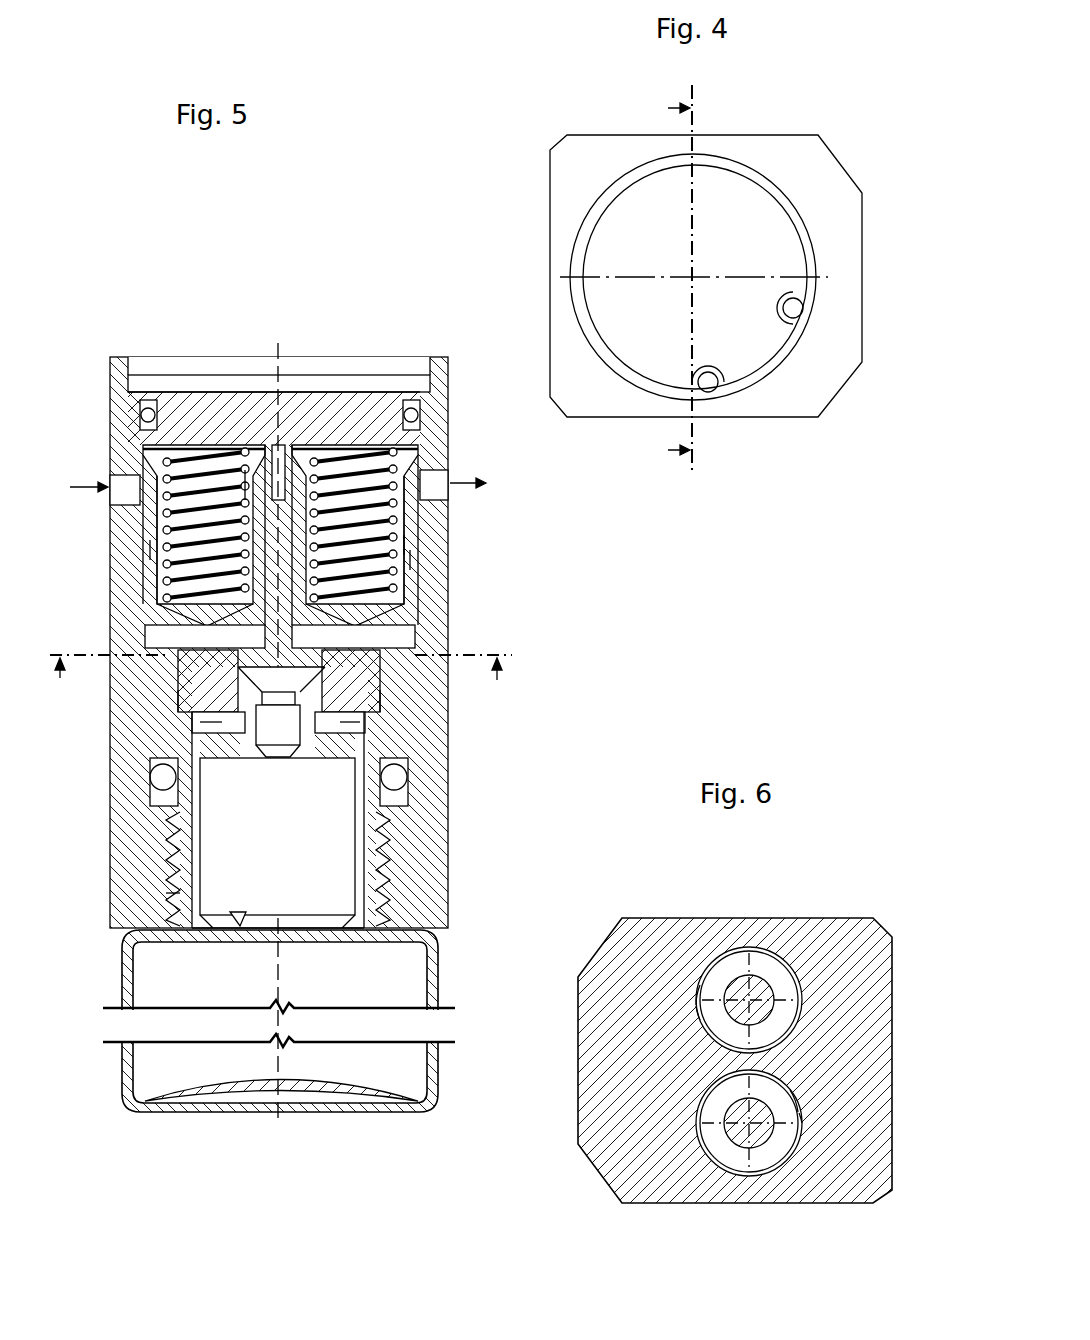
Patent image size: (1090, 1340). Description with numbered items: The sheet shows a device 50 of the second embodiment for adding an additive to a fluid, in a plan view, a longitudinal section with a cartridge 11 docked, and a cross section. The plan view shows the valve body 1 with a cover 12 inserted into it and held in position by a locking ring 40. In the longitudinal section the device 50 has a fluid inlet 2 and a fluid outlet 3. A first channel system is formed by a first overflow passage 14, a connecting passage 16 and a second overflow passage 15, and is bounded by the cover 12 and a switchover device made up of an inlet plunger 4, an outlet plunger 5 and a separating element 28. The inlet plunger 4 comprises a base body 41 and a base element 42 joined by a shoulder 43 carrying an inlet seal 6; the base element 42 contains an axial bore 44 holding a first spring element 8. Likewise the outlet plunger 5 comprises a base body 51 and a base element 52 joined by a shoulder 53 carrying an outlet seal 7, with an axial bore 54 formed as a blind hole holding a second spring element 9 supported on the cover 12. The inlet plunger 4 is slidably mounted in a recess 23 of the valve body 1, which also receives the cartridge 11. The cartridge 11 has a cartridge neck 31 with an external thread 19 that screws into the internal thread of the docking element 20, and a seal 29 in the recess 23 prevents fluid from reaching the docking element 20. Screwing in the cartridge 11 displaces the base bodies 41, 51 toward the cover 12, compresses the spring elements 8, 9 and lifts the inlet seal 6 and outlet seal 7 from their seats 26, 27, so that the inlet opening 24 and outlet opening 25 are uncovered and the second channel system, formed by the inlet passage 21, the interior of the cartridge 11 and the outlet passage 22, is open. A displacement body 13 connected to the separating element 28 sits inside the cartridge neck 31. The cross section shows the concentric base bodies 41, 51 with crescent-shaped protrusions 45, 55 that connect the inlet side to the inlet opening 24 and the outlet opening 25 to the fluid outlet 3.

In FIG. 5, the valve body 1 is at (448, 762).
In FIG. 4, the valve body 1 is at (592, 170).
In FIG. 6, the valve body 1 is at (639, 952).
In FIG. 5, the fluid inlet 2 is at (128, 497).
In FIG. 5, the fluid outlet 3 is at (430, 493).
In FIG. 5, the inlet plunger 4 is at (152, 560).
In FIG. 5, the outlet plunger 5 is at (410, 580).
In FIG. 5, the inlet seal 6 is at (158, 632).
In FIG. 6, the inlet seal 6 is at (703, 1127).
In FIG. 5, the outlet seal 7 is at (425, 640).
In FIG. 6, the outlet seal 7 is at (770, 969).
In FIG. 5, the first spring element 8 is at (163, 510).
In FIG. 5, the second spring element 9 is at (400, 528).
In FIG. 5, the cartridge 11 is at (138, 1105).
In FIG. 5, the cover 12 is at (243, 480).
In FIG. 4, the cover 12 is at (750, 215).
In FIG. 5, the displacement body 13 is at (238, 912).
In FIG. 5, the first overflow passage 14 is at (147, 448).
In FIG. 5, the second overflow passage 15 is at (425, 447).
In FIG. 5, the connecting passage 16 is at (268, 440).
In FIG. 5, the external thread 19 is at (165, 893).
In FIG. 5, the docking element 20 is at (165, 880).
In FIG. 5, the inlet passage 21 is at (220, 722).
In FIG. 6, the inlet passage 21 is at (812, 1102).
In FIG. 5, the outlet passage 22 is at (340, 720).
In FIG. 6, the outlet passage 22 is at (686, 1009).
In FIG. 5, the recess 23 is at (430, 615).
In FIG. 5, the inlet opening 24 is at (175, 702).
In FIG. 5, the outlet opening 25 is at (395, 708).
In FIG. 5, the seat 26 is at (165, 665).
In FIG. 5, the seat 27 is at (430, 672).
In FIG. 5, the separating element 28 is at (285, 440).
In FIG. 5, the seal 29 is at (150, 780).
In FIG. 5, the cartridge neck 31 is at (395, 836).
In FIG. 5, the locking ring 40 is at (128, 365).
In FIG. 4, the locking ring 40 is at (800, 305).
In FIG. 5, the base body 41 is at (195, 672).
In FIG. 6, the base body 41 is at (755, 1142).
In FIG. 5, the base element 42 is at (153, 550).
In FIG. 5, the shoulder 43 is at (150, 617).
In FIG. 5, the axial bore 44 is at (248, 480).
In FIG. 5, the protrusion 45 is at (281, 712).
In FIG. 6, the protrusion 45 is at (814, 1106).
In FIG. 5, the device 50 is at (157, 250).
In FIG. 5, the base body 51 is at (385, 688).
In FIG. 6, the base body 51 is at (738, 990).
In FIG. 5, the base element 52 is at (405, 558).
In FIG. 5, the shoulder 53 is at (385, 641).
In FIG. 5, the axial bore 54 is at (405, 543).
In FIG. 6, the protrusion 55 is at (686, 1036).